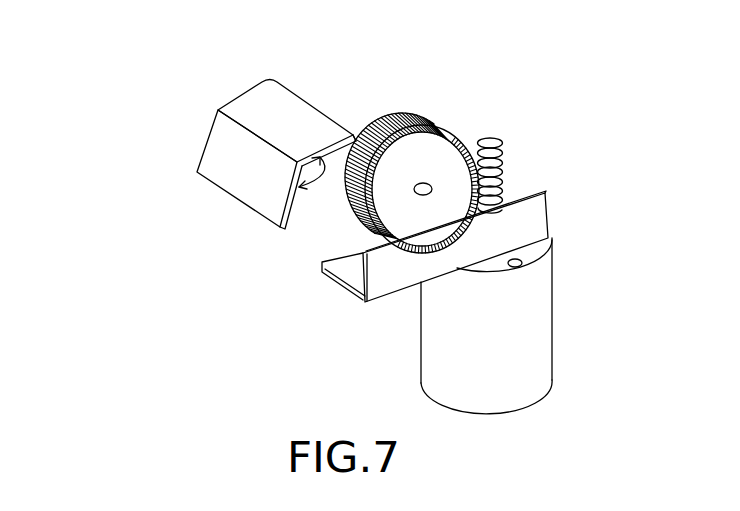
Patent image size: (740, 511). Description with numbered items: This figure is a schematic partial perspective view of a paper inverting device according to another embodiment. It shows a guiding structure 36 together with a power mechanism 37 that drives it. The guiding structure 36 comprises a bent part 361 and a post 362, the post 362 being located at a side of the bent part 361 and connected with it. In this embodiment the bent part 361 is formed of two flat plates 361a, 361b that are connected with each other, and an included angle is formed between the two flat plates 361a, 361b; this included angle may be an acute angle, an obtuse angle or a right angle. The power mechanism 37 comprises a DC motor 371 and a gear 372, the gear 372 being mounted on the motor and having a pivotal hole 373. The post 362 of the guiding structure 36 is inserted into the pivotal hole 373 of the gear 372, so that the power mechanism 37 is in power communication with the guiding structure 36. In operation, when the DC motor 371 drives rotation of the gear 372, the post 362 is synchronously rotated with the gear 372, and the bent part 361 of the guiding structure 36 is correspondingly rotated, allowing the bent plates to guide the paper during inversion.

The guiding structure 36 is at (292, 73).
The bent part 361 is at (110, 52).
The flat plate 361a is at (258, 100).
The flat plate 361b is at (220, 157).
The post 362 is at (356, 141).
The power mechanism 37 is at (556, 228).
The DC motor 371 is at (539, 360).
The gear 372 is at (425, 115).
The pivotal hole 373 is at (425, 182).